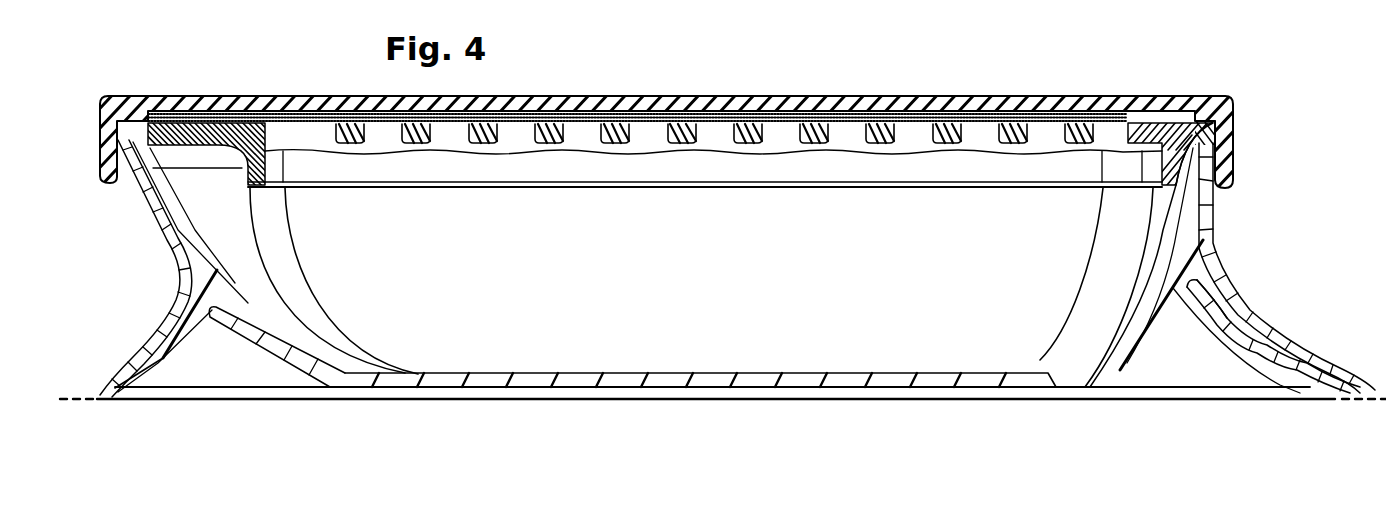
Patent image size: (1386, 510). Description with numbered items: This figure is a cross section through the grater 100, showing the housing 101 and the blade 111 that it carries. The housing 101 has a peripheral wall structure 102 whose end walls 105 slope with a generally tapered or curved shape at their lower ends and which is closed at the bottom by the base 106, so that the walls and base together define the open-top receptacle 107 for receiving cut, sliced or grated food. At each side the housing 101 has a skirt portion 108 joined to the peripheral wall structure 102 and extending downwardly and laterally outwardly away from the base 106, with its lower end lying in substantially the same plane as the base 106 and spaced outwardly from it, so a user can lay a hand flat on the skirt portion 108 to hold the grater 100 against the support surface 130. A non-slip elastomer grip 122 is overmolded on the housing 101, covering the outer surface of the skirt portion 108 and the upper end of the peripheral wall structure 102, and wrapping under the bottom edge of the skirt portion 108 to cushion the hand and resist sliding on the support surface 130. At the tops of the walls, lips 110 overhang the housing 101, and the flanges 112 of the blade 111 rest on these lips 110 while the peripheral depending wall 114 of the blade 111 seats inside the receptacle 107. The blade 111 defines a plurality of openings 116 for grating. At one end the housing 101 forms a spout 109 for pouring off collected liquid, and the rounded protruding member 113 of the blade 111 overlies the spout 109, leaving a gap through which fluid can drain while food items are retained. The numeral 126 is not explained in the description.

The grater 100 is at (864, 93).
The housing 101 is at (1212, 157).
The peripheral wall structure 102 is at (1215, 208).
The end walls 105 is at (264, 281).
The base 106 is at (677, 362).
The open-top receptacle 107 is at (718, 262).
The skirt portion 108 is at (1230, 296).
The spout 109 is at (130, 160).
The lips 110 is at (1228, 123).
The blade 111 is at (531, 122).
The flanges 112 is at (220, 96).
The rounded protruding member 113 is at (149, 98).
The peripheral depending wall 114 is at (779, 173).
The openings 116 is at (978, 133).
The grip 122 is at (153, 340).
The top cover 126 is at (289, 92).
The support surface 130 is at (90, 397).